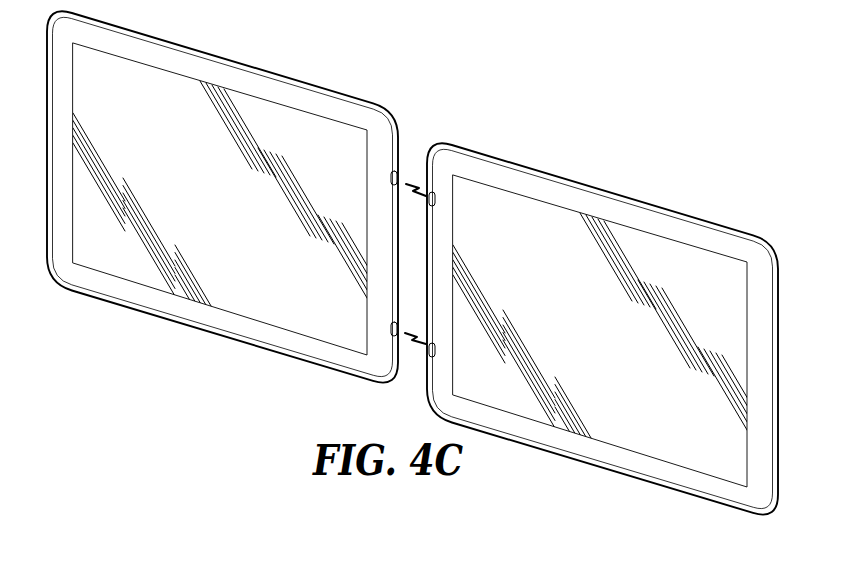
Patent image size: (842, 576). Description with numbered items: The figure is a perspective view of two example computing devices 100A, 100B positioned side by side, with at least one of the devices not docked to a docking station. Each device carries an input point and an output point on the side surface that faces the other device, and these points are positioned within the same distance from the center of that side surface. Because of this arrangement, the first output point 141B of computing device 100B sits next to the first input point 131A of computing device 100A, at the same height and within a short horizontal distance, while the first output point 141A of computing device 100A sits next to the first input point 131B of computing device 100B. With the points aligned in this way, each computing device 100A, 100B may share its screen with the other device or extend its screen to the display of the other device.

The computing device 100A is at (178, 42).
The computing device 100B is at (557, 173).
The first input point 131A is at (391, 176).
The first output point 141A is at (391, 329).
The first input point 131B is at (435, 352).
The first output point 141B is at (435, 199).